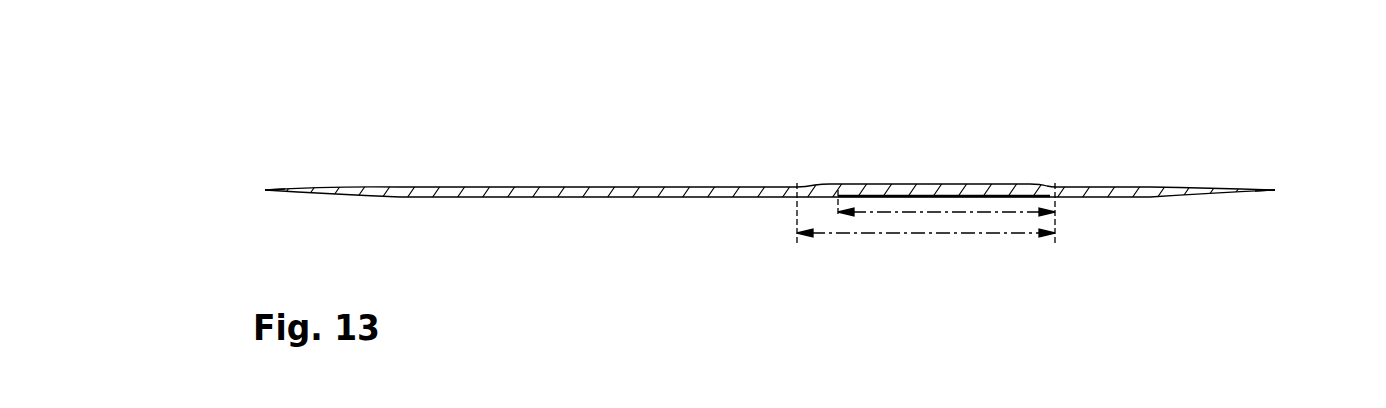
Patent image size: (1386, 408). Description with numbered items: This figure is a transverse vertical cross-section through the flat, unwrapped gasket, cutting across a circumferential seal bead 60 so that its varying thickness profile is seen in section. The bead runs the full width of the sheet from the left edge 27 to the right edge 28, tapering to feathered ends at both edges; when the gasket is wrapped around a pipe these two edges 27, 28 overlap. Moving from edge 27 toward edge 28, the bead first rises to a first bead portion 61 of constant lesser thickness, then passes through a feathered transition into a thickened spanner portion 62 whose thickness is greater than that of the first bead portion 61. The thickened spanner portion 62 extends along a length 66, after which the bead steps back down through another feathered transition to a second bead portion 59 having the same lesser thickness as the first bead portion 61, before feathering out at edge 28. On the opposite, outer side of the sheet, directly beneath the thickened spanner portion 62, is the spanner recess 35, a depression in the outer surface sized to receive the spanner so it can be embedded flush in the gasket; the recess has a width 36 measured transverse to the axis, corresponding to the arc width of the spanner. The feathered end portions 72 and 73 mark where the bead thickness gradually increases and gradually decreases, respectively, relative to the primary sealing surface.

The edge 27 is at (273, 190).
The edge 28 is at (1272, 190).
The spanner recess 35 is at (1000, 198).
The width 36 is at (940, 212).
The second bead portion 59 is at (1115, 186).
The circumferential seal bead 60 is at (658, 178).
The first bead portion 61 is at (443, 186).
The thickened spanner portion 62 is at (922, 186).
The length 66 is at (877, 233).
The feathered end portion 72 is at (808, 187).
The feathered end portion 73 is at (1042, 184).